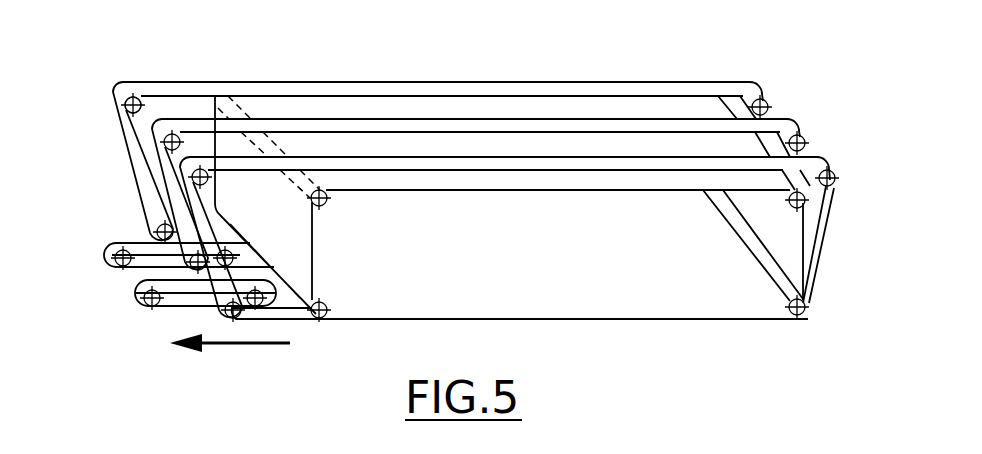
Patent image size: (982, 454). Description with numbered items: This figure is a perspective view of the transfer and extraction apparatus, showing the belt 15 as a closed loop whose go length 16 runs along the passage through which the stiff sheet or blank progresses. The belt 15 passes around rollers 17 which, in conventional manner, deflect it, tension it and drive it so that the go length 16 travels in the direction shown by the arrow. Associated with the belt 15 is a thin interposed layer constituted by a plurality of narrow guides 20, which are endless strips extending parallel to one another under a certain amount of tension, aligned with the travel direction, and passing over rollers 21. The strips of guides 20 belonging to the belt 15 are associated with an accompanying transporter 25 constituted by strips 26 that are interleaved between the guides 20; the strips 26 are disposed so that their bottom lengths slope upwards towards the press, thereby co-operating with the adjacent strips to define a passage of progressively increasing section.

The belt 15 is at (536, 319).
The go length 16 is at (607, 301).
The rollers 17 is at (735, 227).
The narrow guides 20 is at (630, 82).
The rollers 21 is at (139, 99).
The accompanying transporter 25 is at (121, 277).
The strips 26 is at (135, 243).